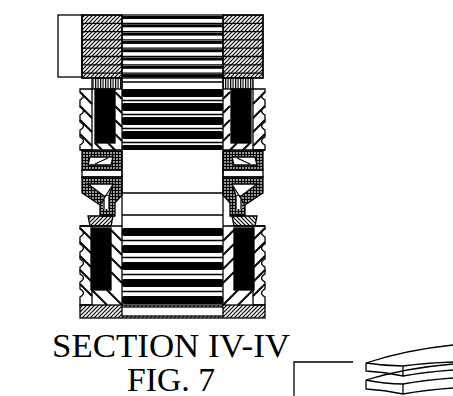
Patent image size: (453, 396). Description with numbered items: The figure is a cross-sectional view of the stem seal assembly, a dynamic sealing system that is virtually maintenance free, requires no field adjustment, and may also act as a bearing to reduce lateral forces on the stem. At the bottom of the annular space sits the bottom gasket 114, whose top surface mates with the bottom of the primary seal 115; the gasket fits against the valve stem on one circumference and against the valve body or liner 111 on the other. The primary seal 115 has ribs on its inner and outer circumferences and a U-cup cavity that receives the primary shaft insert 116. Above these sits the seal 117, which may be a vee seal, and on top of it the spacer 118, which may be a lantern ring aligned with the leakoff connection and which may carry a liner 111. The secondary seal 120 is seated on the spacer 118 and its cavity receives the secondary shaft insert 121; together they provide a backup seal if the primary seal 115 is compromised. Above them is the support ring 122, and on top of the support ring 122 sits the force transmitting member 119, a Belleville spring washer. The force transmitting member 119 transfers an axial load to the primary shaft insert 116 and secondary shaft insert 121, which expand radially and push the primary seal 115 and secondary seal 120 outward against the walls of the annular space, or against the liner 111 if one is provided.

The liner 111 is at (265, 157).
The bottom gasket 114 is at (262, 312).
The primary seal 115 is at (262, 275).
The primary shaft insert 116 is at (262, 237).
The seal 117 is at (263, 222).
The spacer 118 is at (263, 193).
The force transmitting member 119 is at (58, 46).
The secondary seal 120 is at (260, 148).
The secondary shaft insert 121 is at (245, 115).
The support ring 122 is at (244, 77).